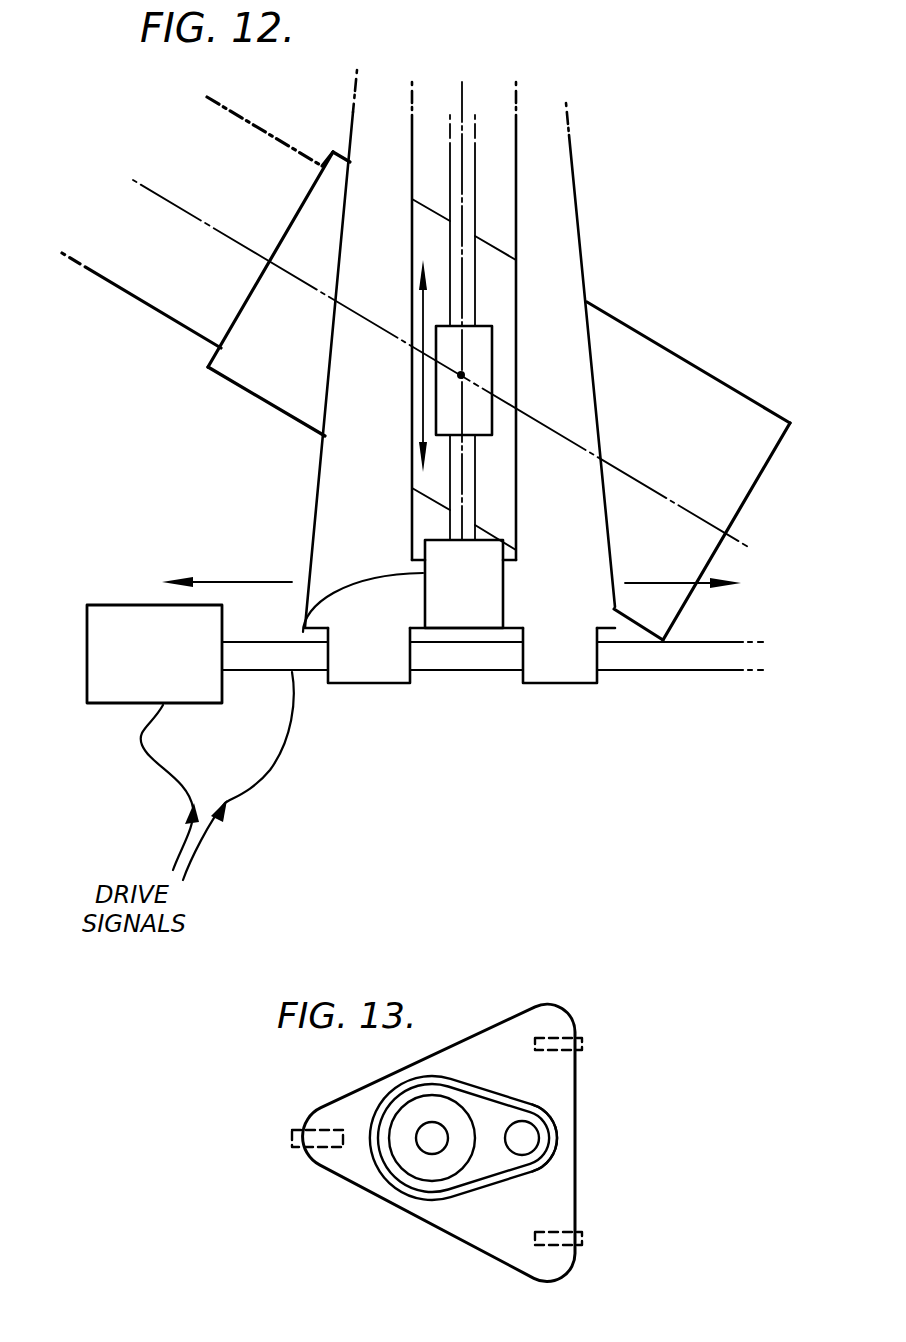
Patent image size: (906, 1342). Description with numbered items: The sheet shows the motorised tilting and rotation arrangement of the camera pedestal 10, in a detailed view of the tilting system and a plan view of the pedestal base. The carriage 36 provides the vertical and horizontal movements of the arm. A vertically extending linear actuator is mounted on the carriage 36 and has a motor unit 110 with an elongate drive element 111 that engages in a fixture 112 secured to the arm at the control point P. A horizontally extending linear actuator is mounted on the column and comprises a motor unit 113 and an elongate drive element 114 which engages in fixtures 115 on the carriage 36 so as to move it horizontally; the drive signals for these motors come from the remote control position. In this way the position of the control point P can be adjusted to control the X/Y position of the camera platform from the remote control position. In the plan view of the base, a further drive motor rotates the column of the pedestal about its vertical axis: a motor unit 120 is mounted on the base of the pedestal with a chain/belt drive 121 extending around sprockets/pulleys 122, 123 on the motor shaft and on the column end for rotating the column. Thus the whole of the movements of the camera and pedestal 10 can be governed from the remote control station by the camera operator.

In FIG. 12, the load carrier block 10 is at (747, 340).
In FIG. 12, the carriage 36 is at (551, 148).
In FIG. 12, the motor unit 110 is at (475, 603).
In FIG. 12, the elongate drive element 111 is at (445, 485).
In FIG. 12, the fixture 112 is at (485, 375).
In FIG. 12, the motor unit 113 is at (120, 613).
In FIG. 12, the elongate drive element 114 is at (313, 660).
In FIG. 12, the fixtures 115 is at (390, 677).
In FIG. 13, the motor unit 120 is at (523, 1132).
In FIG. 13, the chain/belt drive 121 is at (480, 1102).
In FIG. 13, the sprocket/pulley 122 is at (403, 1165).
In FIG. 13, the sprocket/pulley 123 is at (545, 1160).
In FIG. 12, the control point P is at (461, 375).